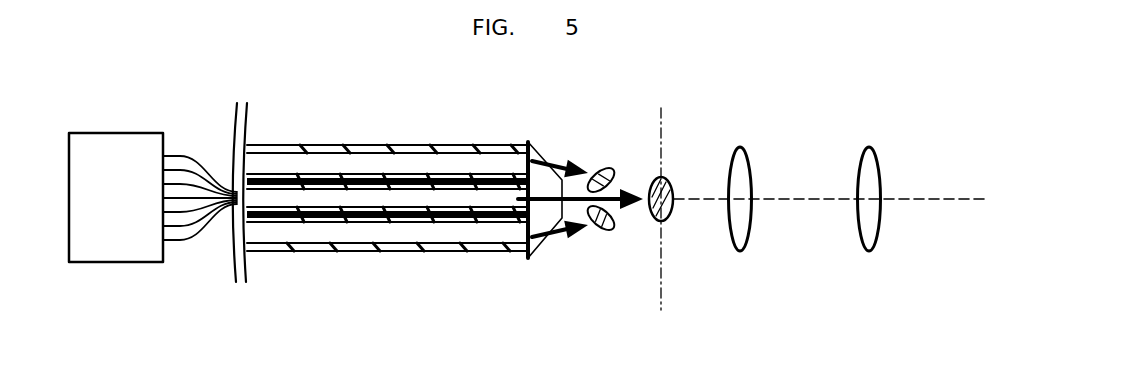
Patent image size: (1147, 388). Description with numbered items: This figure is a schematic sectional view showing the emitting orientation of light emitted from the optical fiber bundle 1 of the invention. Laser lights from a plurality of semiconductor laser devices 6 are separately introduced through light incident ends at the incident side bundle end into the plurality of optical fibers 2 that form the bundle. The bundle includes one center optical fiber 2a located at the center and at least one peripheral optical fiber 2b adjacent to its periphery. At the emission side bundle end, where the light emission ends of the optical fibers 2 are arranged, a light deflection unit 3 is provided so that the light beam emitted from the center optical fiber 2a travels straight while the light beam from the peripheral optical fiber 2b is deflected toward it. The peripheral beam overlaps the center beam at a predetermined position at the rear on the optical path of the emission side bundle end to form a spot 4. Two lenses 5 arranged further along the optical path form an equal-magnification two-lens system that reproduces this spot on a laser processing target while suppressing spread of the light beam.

The optical fiber bundle 1 is at (438, 214).
The optical fibers 2 is at (380, 238).
The center optical fiber 2a is at (352, 196).
The peripheral optical fiber 2b is at (298, 160).
The light deflection unit 3 is at (553, 258).
The spot 4 is at (665, 177).
The lenses 5 is at (740, 147).
The semiconductor laser devices 6 is at (113, 132).